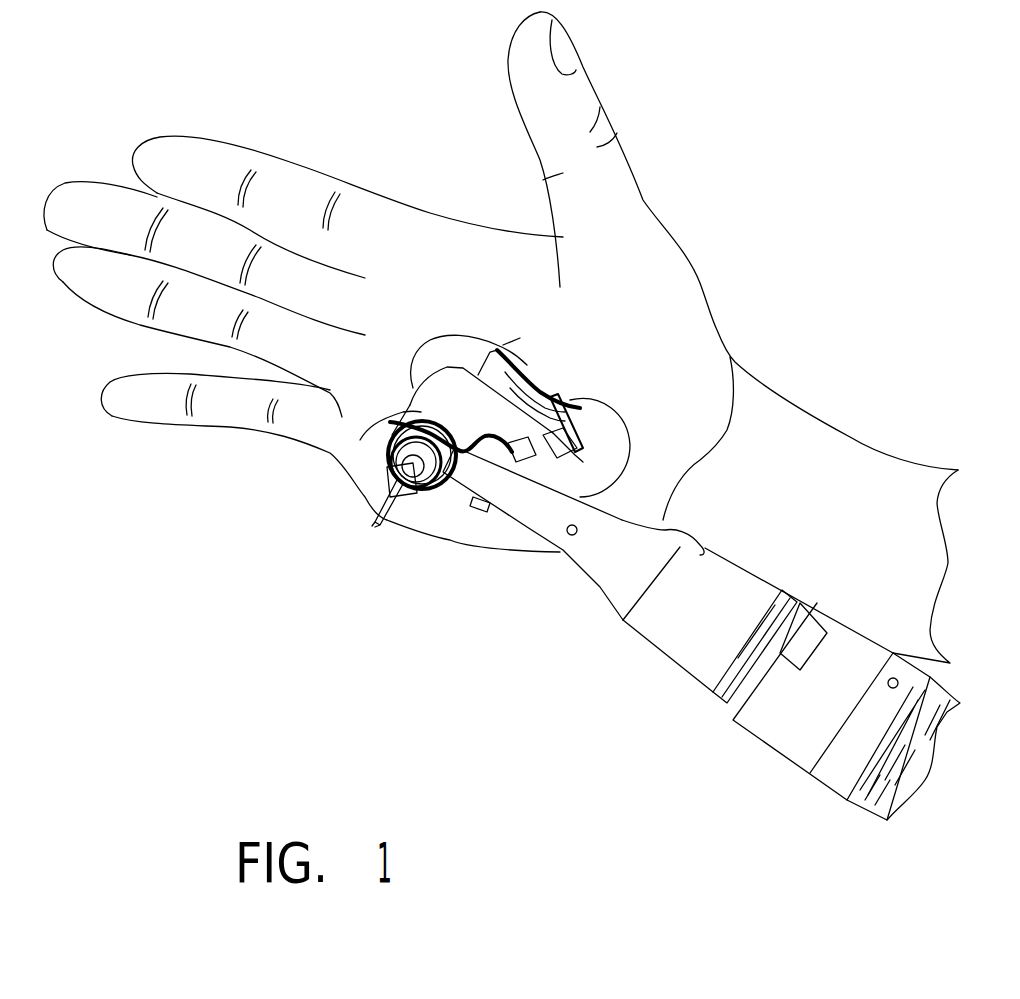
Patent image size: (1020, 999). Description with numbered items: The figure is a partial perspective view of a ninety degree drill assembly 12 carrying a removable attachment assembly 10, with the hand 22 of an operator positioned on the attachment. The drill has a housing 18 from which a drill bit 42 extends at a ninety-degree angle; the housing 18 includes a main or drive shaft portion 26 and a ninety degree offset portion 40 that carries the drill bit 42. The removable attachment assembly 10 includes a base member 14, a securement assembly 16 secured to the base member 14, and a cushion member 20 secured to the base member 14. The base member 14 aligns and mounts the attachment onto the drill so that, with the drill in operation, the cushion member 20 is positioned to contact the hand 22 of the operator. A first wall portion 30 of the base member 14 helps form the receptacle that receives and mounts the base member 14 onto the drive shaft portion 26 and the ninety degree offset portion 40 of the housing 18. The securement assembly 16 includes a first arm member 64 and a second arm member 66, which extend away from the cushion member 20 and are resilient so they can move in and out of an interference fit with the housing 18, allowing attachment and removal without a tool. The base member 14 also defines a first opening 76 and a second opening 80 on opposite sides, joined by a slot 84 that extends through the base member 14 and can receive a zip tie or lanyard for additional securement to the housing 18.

The removable attachment assembly 10 is at (415, 332).
The ninety degree drill assembly 12 is at (501, 337).
The base member 14 is at (460, 395).
The securement assembly 16 is at (532, 476).
The housing 18 is at (598, 525).
The cushion member 20 is at (593, 447).
The hand 22 is at (420, 207).
The drive shaft portion 26 is at (583, 566).
The first wall portion 30 is at (385, 417).
The ninety degree offset portion 40 is at (385, 438).
The drill bit 42 is at (383, 526).
The first arm member 64 is at (477, 513).
The second arm member 66 is at (505, 360).
The first opening 76 is at (563, 440).
The second opening 80 is at (700, 468).
The slot 84 is at (577, 420).